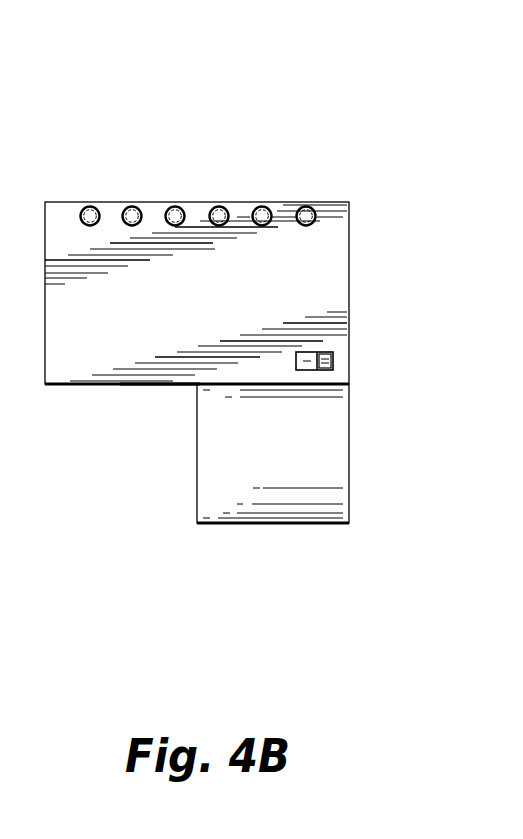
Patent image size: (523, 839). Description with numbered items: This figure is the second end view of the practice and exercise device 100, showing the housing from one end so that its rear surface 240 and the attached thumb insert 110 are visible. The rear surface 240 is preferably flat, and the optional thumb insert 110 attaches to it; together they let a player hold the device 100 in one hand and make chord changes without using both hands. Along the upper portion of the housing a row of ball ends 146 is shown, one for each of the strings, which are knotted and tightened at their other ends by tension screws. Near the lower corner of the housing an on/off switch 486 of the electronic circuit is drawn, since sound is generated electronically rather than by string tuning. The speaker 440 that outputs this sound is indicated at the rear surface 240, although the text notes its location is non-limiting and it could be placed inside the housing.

The practice and exercise device 100 is at (237, 271).
The ball end 146 is at (133, 201).
The on/off switch 486 is at (338, 363).
The thumb insert 110 is at (273, 453).
The rear surface 240 is at (76, 386).
The speaker 440 is at (163, 386).